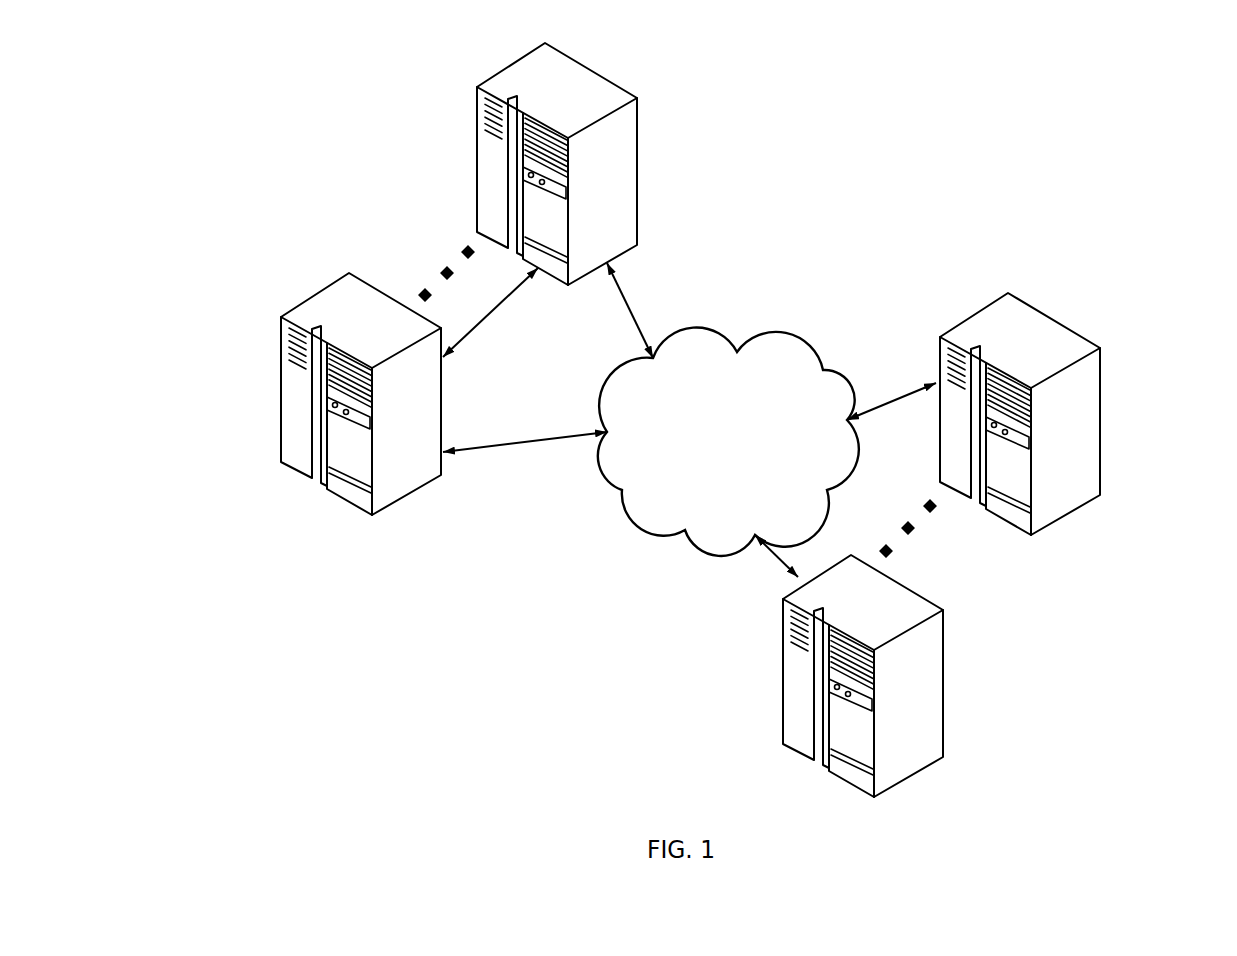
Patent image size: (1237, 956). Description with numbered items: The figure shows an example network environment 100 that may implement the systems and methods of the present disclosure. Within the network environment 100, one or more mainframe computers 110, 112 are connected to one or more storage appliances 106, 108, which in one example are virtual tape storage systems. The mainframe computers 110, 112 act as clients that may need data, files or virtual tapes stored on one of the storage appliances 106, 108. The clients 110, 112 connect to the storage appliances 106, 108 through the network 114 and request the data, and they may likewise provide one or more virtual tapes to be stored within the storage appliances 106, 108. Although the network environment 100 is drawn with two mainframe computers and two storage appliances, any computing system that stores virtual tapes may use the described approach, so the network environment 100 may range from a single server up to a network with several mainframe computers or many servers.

The network environment 100 is at (368, 161).
The storage appliance 106 is at (637, 122).
The storage appliance 108 is at (281, 430).
The mainframe computer 110 is at (782, 682).
The mainframe computer 112 is at (1101, 380).
The network 114 is at (728, 441).